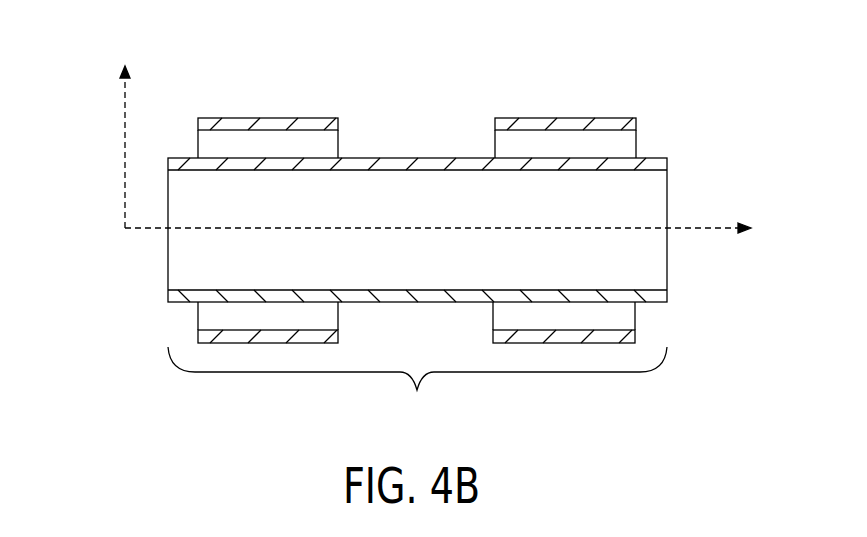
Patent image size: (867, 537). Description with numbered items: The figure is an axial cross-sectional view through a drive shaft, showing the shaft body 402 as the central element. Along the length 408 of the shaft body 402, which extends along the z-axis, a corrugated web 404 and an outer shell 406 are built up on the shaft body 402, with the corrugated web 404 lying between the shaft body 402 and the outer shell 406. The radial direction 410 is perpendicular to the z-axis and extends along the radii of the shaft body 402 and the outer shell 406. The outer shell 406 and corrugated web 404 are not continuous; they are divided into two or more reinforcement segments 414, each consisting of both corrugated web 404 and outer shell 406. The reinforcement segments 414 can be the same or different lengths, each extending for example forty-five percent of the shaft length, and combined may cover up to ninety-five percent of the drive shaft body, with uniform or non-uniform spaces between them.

The shaft body 402 is at (660, 160).
The corrugated web 404 is at (335, 147).
The outer shell 406 is at (293, 118).
The length 408 is at (417, 392).
The radial direction 410 is at (124, 137).
The reinforcement segments 414 is at (222, 125).